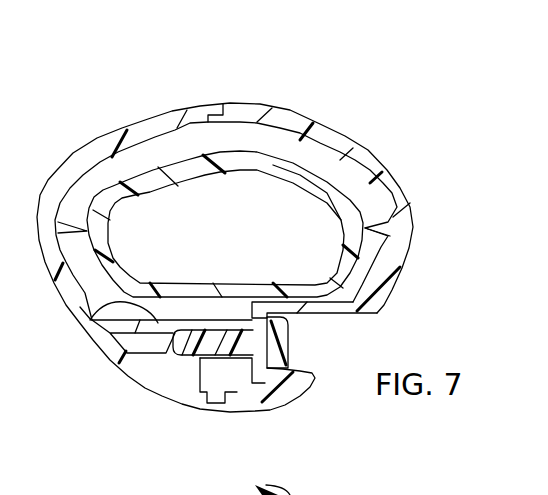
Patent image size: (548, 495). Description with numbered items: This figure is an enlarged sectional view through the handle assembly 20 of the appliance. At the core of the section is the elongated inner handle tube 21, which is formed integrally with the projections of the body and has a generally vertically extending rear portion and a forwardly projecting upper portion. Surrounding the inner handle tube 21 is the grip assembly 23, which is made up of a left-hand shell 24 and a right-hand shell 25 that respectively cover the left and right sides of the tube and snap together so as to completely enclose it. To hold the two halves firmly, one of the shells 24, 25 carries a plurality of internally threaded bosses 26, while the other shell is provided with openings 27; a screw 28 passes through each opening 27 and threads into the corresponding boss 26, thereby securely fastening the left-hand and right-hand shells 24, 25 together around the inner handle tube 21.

The handle assembly 20 is at (294, 24).
The inner handle tube 21 is at (273, 165).
The grip assembly 23 is at (171, 103).
The left-hand shell 24 is at (362, 160).
The right-hand shell 25 is at (88, 160).
The internally threaded boss 26 is at (107, 302).
The opening 27 is at (255, 342).
The screw 28 is at (185, 354).